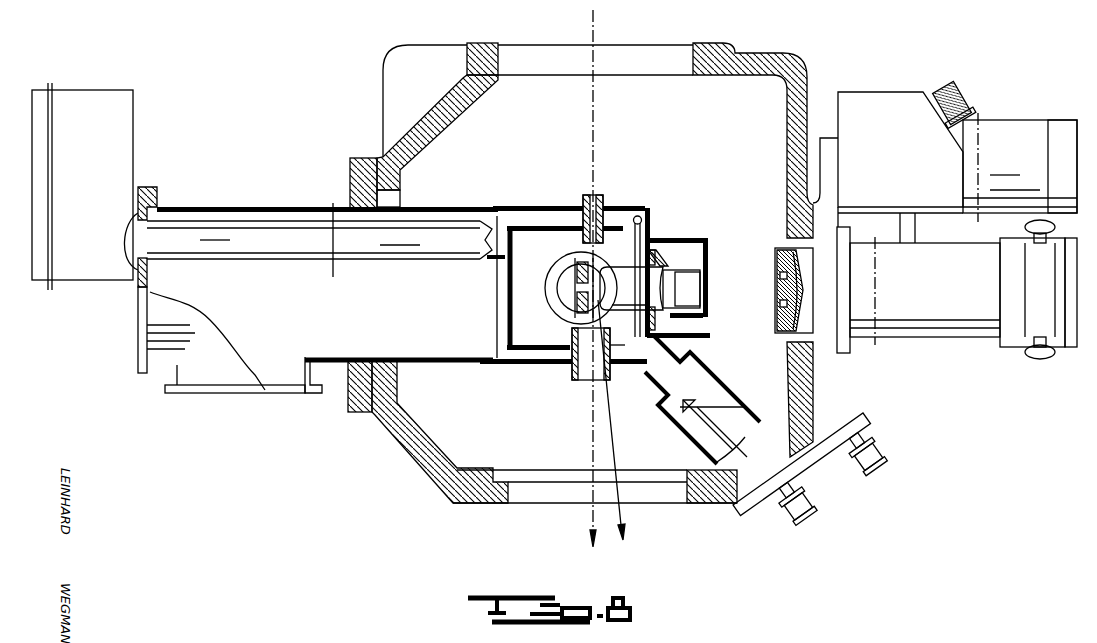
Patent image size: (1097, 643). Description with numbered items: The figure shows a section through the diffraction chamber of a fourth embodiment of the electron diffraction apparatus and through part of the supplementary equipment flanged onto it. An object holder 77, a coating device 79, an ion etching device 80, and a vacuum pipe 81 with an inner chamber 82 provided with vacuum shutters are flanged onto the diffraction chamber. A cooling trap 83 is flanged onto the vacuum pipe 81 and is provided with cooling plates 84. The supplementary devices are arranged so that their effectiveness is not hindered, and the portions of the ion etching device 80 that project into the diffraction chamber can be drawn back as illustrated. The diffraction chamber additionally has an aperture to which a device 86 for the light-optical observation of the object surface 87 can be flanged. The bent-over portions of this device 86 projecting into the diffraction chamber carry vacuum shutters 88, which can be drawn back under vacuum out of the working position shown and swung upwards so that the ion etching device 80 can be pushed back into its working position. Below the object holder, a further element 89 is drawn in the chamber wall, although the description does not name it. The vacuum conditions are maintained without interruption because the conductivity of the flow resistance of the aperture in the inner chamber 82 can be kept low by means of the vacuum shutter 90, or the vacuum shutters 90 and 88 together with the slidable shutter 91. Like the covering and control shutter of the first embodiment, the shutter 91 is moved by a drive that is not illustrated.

The object holder 77 is at (576, 260).
The coating device 79 is at (760, 460).
The ion etching device 80 is at (942, 293).
The vacuum pipe 81 is at (452, 206).
The inner chamber 82 is at (526, 207).
The cooling trap 83 is at (441, 252).
The cooling plates 84 is at (583, 218).
The device for light-optical observation 86 is at (640, 293).
The object surface 87 is at (596, 262).
The vacuum shutters 88 is at (668, 250).
The bushing 89 is at (605, 360).
The vacuum shutter 90 is at (690, 240).
The slidable shutter 91 is at (642, 220).